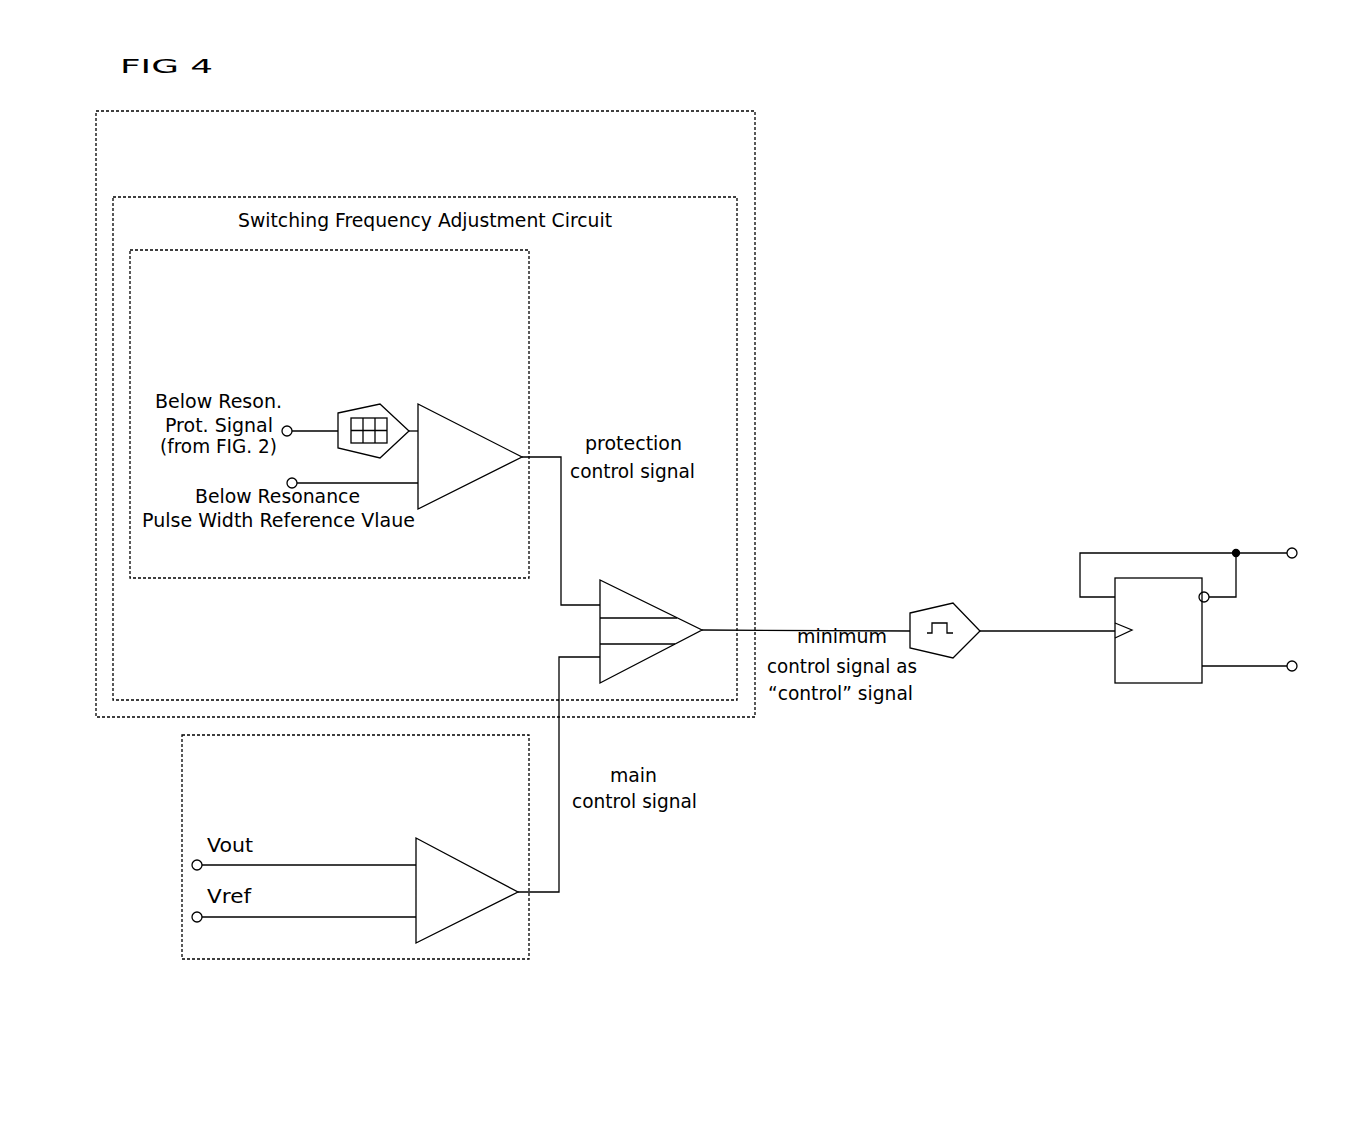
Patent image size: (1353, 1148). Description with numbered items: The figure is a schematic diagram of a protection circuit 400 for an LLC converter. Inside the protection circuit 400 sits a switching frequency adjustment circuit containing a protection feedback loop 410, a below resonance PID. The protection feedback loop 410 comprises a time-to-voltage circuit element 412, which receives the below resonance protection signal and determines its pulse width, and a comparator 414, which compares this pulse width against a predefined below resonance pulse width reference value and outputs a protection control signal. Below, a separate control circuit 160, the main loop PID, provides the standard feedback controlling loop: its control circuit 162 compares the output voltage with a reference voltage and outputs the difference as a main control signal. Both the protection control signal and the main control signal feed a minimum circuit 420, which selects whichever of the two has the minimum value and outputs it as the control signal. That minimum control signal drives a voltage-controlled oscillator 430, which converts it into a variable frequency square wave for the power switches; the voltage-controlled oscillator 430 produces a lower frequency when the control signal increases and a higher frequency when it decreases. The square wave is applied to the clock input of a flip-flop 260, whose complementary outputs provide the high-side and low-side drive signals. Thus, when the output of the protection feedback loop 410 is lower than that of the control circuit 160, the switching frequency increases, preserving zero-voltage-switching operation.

The protection circuit 400 is at (442, 145).
The protection feedback loop 410 is at (348, 283).
The time-to-voltage circuit element 412 is at (371, 403).
The comparator 414 is at (472, 455).
The minimum circuit 420 is at (653, 606).
The voltage-controlled oscillator 430 is at (945, 606).
The control circuit 160 is at (372, 770).
The control circuit 162 is at (472, 886).
The flip-flop 260 is at (1193, 627).